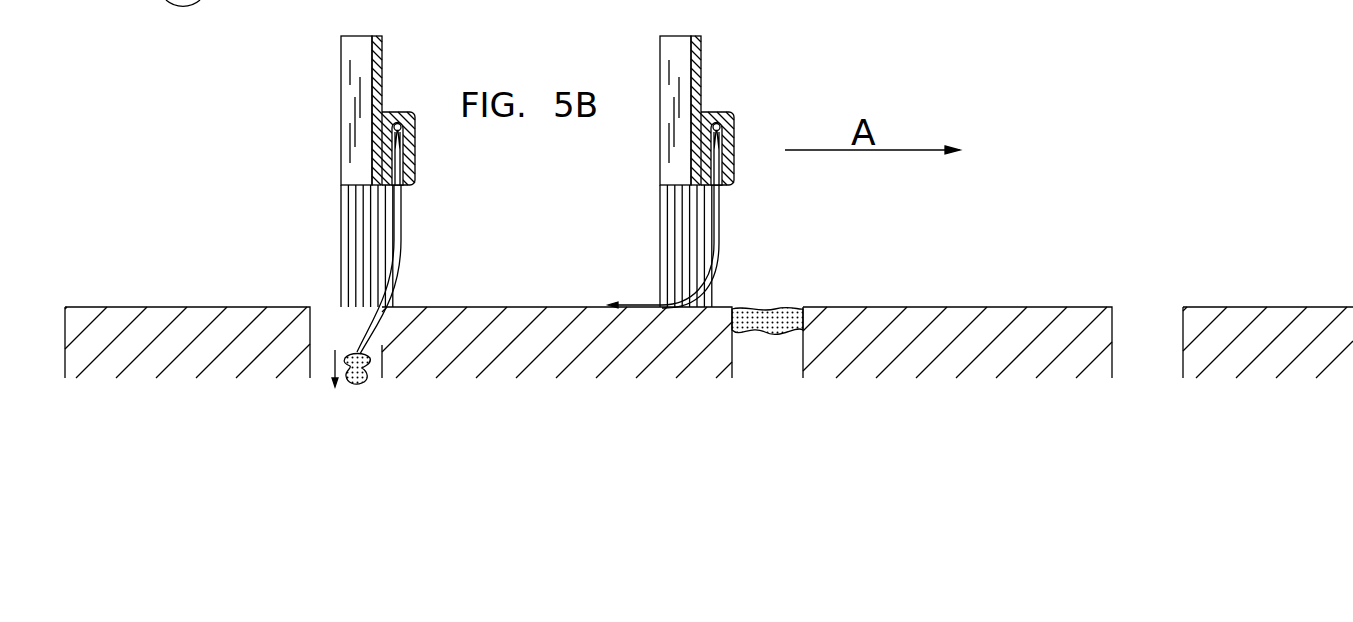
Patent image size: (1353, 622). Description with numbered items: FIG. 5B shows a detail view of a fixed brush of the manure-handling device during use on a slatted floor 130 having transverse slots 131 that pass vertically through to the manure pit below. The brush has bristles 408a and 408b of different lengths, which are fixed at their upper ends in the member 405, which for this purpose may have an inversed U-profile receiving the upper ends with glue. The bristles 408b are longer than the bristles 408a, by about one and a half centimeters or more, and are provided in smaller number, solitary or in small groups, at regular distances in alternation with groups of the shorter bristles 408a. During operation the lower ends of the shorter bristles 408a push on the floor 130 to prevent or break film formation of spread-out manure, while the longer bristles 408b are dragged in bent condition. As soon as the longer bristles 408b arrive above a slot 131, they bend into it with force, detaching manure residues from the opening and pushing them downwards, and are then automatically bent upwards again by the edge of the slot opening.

The floor 130 is at (197, 303).
The transverse slots 131 is at (323, 342).
The member 405 is at (377, 48).
The bristles 408a is at (340, 238).
The bristles 408b is at (620, 304).